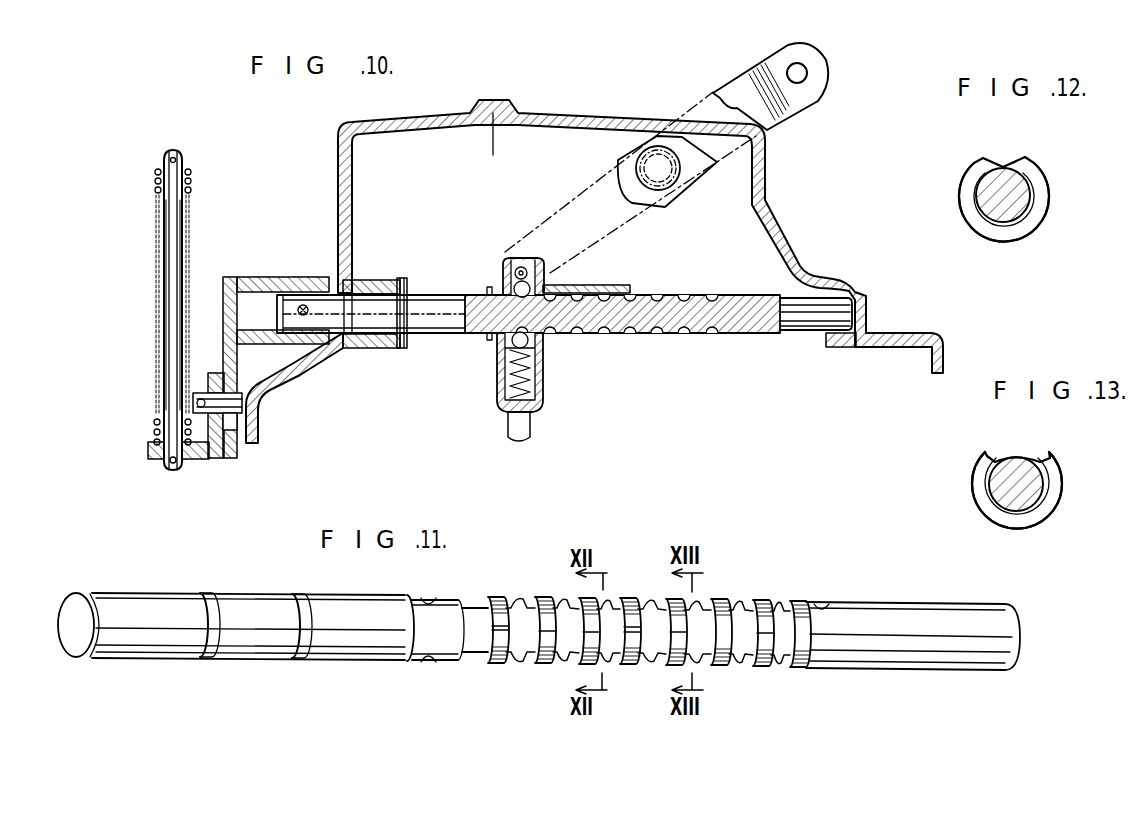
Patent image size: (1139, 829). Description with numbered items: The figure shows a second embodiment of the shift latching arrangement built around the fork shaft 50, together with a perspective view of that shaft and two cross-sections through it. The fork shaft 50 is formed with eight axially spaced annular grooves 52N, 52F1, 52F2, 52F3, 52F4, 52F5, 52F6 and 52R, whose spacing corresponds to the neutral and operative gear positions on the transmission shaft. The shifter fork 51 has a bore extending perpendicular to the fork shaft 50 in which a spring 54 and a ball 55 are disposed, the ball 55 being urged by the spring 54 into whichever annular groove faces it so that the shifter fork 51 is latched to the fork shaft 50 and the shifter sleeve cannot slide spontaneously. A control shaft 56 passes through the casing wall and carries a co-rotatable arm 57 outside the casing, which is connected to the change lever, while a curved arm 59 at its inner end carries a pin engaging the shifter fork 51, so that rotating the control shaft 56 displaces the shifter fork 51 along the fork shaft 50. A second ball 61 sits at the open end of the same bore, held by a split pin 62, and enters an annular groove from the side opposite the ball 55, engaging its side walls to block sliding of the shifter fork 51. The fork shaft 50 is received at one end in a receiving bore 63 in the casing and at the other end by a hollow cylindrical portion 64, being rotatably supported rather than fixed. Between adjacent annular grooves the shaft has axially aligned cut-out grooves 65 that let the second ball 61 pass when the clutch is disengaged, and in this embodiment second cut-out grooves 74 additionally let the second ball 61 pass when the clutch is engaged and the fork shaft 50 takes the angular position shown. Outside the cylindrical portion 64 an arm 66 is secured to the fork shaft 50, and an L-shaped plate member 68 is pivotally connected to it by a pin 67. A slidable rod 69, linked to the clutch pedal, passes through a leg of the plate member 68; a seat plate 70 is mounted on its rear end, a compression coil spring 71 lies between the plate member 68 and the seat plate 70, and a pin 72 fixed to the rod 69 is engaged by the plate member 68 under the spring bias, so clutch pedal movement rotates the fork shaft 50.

In FIG. 10, the fork shaft 50 is at (438, 315).
In FIG. 12, the fork shaft 50 is at (988, 205).
In FIG. 13, the fork shaft 50 is at (1017, 487).
In FIG. 10, the shifter fork 51 is at (500, 392).
In FIG. 10, the annular groove 52F1 is at (713, 337).
In FIG. 11, the annular groove 52F1 is at (798, 628).
In FIG. 10, the annular groove 52F2 is at (631, 337).
In FIG. 11, the annular groove 52F2 is at (645, 602).
In FIG. 10, the annular groove 52F3 is at (605, 338).
In FIG. 12, the annular groove 52F3 is at (1020, 225).
In FIG. 11, the annular groove 52F3 is at (623, 660).
In FIG. 10, the annular groove 52F4 is at (578, 338).
In FIG. 11, the annular groove 52F4 is at (560, 613).
In FIG. 10, the annular groove 52F5 is at (552, 338).
In FIG. 11, the annular groove 52F5 is at (493, 640).
In FIG. 10, the annular groove 52F6 is at (514, 334).
In FIG. 11, the annular groove 52F6 is at (466, 662).
In FIG. 10, the annular groove 52N is at (658, 337).
In FIG. 13, the annular groove 52N is at (993, 507).
In FIG. 11, the annular groove 52N is at (700, 640).
In FIG. 10, the annular groove 52R is at (685, 337).
In FIG. 11, the annular groove 52R is at (758, 655).
In FIG. 10, the spring 54 is at (527, 410).
In FIG. 10, the ball 55 is at (500, 345).
In FIG. 10, the control shaft 56 is at (652, 160).
In FIG. 10, the co-rotatable arm 57 is at (787, 95).
In FIG. 10, the curved arm 59 is at (598, 192).
In FIG. 10, the second ball 61 is at (514, 272).
In FIG. 10, the split pin 62 is at (512, 258).
In FIG. 10, the receiving bore 63 is at (837, 332).
In FIG. 10, the hollow cylindrical portion 64 is at (392, 342).
In FIG. 12, the cut-out grooves 65 is at (1000, 166).
In FIG. 13, the cut-out grooves 65 is at (996, 456).
In FIG. 11, the cut-out grooves 65 is at (527, 605).
In FIG. 10, the arm 66 is at (237, 357).
In FIG. 10, the pin 67 is at (233, 432).
In FIG. 10, the L-shaped plate member 68 is at (206, 455).
In FIG. 10, the slidable rod 69 is at (173, 293).
In FIG. 10, the seat plate 70 is at (190, 163).
In FIG. 10, the compression coil spring 71 is at (155, 420).
In FIG. 10, the pin 72 is at (172, 462).
In FIG. 10, the second cut-out grooves 74 is at (572, 285).
In FIG. 13, the second cut-out grooves 74 is at (1040, 457).
In FIG. 11, the second cut-out grooves 74 is at (503, 657).